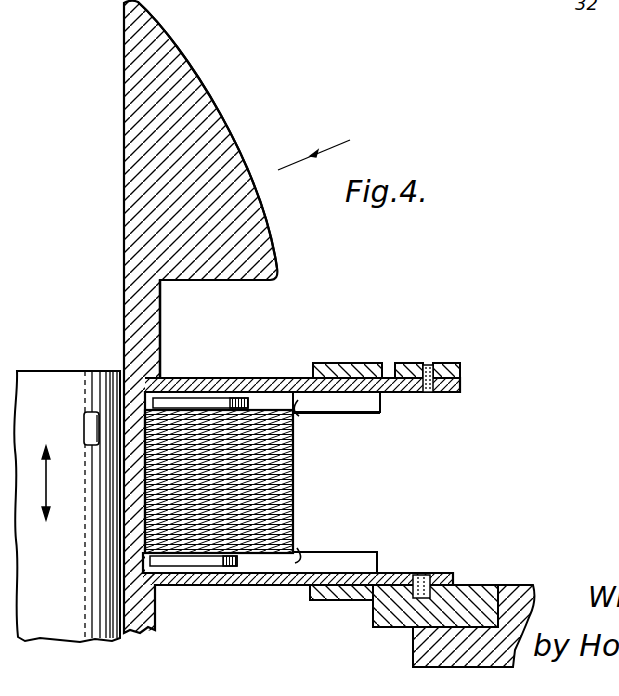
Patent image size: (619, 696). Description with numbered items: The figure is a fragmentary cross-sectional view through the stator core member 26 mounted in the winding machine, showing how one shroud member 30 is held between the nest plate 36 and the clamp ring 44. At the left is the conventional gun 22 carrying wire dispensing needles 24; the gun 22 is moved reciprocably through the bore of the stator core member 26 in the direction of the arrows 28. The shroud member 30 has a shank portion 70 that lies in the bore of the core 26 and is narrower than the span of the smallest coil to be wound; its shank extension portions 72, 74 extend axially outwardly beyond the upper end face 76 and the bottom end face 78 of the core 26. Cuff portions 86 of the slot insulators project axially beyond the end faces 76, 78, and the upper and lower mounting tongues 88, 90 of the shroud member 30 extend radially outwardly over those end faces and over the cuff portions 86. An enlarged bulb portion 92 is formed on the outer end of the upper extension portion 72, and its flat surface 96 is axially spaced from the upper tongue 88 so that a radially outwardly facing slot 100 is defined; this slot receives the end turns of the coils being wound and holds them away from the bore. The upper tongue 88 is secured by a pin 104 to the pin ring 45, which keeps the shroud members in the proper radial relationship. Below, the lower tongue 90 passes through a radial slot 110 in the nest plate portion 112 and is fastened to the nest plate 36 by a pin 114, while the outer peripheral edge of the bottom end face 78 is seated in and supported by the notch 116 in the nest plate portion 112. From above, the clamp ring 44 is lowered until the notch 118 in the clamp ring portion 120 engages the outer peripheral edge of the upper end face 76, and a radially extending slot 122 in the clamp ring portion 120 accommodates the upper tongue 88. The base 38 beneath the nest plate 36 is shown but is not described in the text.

The gun 22 is at (25, 410).
The wire dispensing needles 24 is at (88, 420).
The stator core member 26 is at (300, 520).
The arrows 28 is at (47, 486).
The shroud member 30 is at (378, 144).
The nest plate 36 is at (478, 587).
The base 38 is at (518, 592).
The clamp ring 44 is at (351, 362).
The pin ring 45 is at (409, 362).
The shank portion 70 is at (136, 523).
The shank extension portion 72 is at (163, 310).
The shank extension portion 74 is at (157, 617).
The upper end face 76 is at (264, 410).
The bottom end face 78 is at (263, 570).
The cuff portions 86 is at (196, 402).
The upper mounting tongue 88 is at (220, 392).
The lower mounting tongue 90 is at (298, 588).
The bulb portion 92 is at (247, 155).
The flat surface 96 is at (238, 283).
The radially outwardly facing slot 100 is at (217, 322).
The pins 104 is at (437, 374).
The radial slots 110 is at (362, 560).
The nest plate portion 112 is at (337, 553).
The pins 114 is at (420, 578).
The notch 116 is at (305, 555).
The notch 118 is at (296, 410).
The clamp ring portion 120 is at (357, 418).
The radially extending slots 122 is at (385, 410).